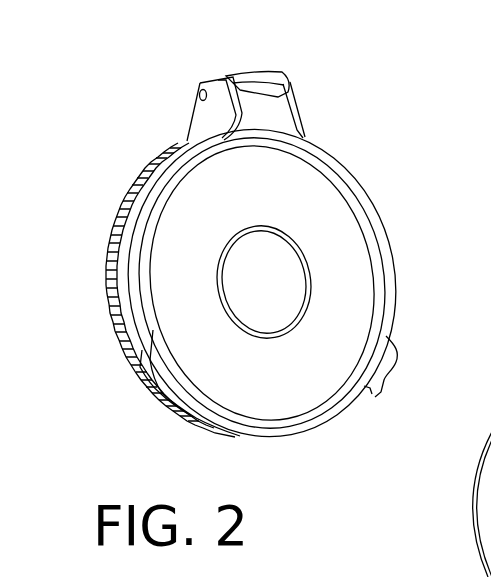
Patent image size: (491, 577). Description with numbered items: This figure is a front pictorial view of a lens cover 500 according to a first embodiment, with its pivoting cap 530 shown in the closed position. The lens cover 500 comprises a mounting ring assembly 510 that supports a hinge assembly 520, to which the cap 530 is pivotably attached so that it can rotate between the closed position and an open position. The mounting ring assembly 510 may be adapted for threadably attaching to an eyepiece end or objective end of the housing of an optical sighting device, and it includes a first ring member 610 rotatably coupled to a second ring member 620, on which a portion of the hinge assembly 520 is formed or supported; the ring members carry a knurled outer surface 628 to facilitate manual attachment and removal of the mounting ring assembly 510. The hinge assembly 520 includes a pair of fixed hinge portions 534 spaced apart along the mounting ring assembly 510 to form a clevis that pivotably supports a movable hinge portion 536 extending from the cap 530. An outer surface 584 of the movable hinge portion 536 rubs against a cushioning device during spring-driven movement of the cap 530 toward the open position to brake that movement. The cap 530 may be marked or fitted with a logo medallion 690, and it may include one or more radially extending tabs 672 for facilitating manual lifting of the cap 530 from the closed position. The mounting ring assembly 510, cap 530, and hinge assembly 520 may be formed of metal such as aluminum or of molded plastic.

The lens cover 500 is at (378, 178).
The mounting ring assembly 510 is at (152, 418).
The hinge assembly 520 is at (284, 70).
The cap 530 is at (345, 227).
The fixed hinge portions 534 is at (195, 107).
The movable hinge portion 536 is at (280, 87).
The outer surface of movable hinge portion 584 is at (250, 72).
The first ring member 610 is at (106, 298).
The second ring member 620 is at (140, 367).
The knurled outer surface 628 is at (125, 188).
The radially extending tabs 672 is at (387, 372).
The logo medallion 690 is at (280, 292).